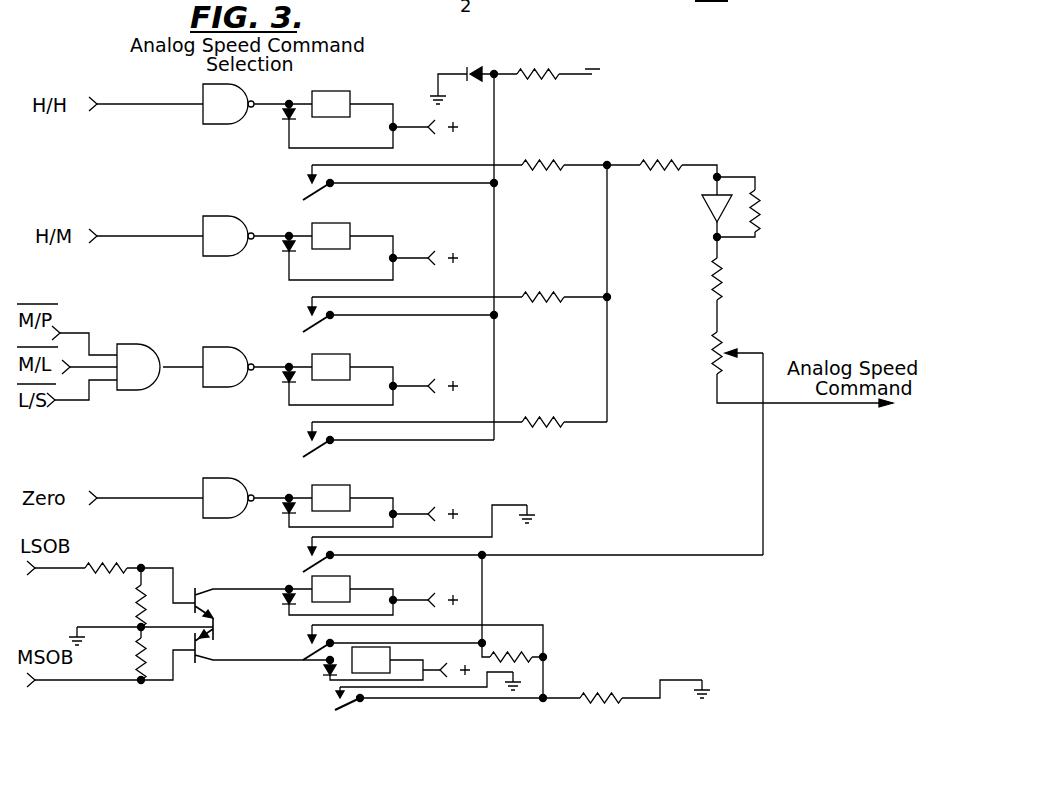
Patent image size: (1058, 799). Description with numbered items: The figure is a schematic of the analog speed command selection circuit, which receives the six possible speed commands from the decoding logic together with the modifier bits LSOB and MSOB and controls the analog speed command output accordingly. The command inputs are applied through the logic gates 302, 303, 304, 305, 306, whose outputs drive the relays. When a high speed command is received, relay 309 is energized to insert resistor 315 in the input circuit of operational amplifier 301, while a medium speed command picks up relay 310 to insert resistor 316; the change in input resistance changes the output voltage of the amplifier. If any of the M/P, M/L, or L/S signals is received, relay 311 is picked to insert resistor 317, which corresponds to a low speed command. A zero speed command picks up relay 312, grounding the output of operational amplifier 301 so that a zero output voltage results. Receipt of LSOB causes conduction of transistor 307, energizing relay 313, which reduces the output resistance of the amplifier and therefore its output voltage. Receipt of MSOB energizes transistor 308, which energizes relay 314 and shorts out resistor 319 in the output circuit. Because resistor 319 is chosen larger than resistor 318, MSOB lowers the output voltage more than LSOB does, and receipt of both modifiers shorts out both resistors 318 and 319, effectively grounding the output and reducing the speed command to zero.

The operational amplifier 301 is at (710, 205).
The NAND gate 302 is at (228, 104).
The NAND gate 303 is at (228, 236).
The AND gate 304 is at (138, 367).
The NAND gate 305 is at (228, 367).
The NAND gate 306 is at (228, 498).
The transistor 307 is at (197, 593).
The transistor 308 is at (201, 664).
The relay 309 is at (331, 104).
The relay 310 is at (331, 236).
The relay 311 is at (331, 367).
The relay 312 is at (331, 498).
The relay 313 is at (331, 589).
The relay 314 is at (371, 660).
The resistor 315 is at (562, 165).
The resistor 316 is at (562, 297).
The resistor 317 is at (562, 422).
The resistor 318 is at (520, 656).
The resistor 319 is at (606, 697).